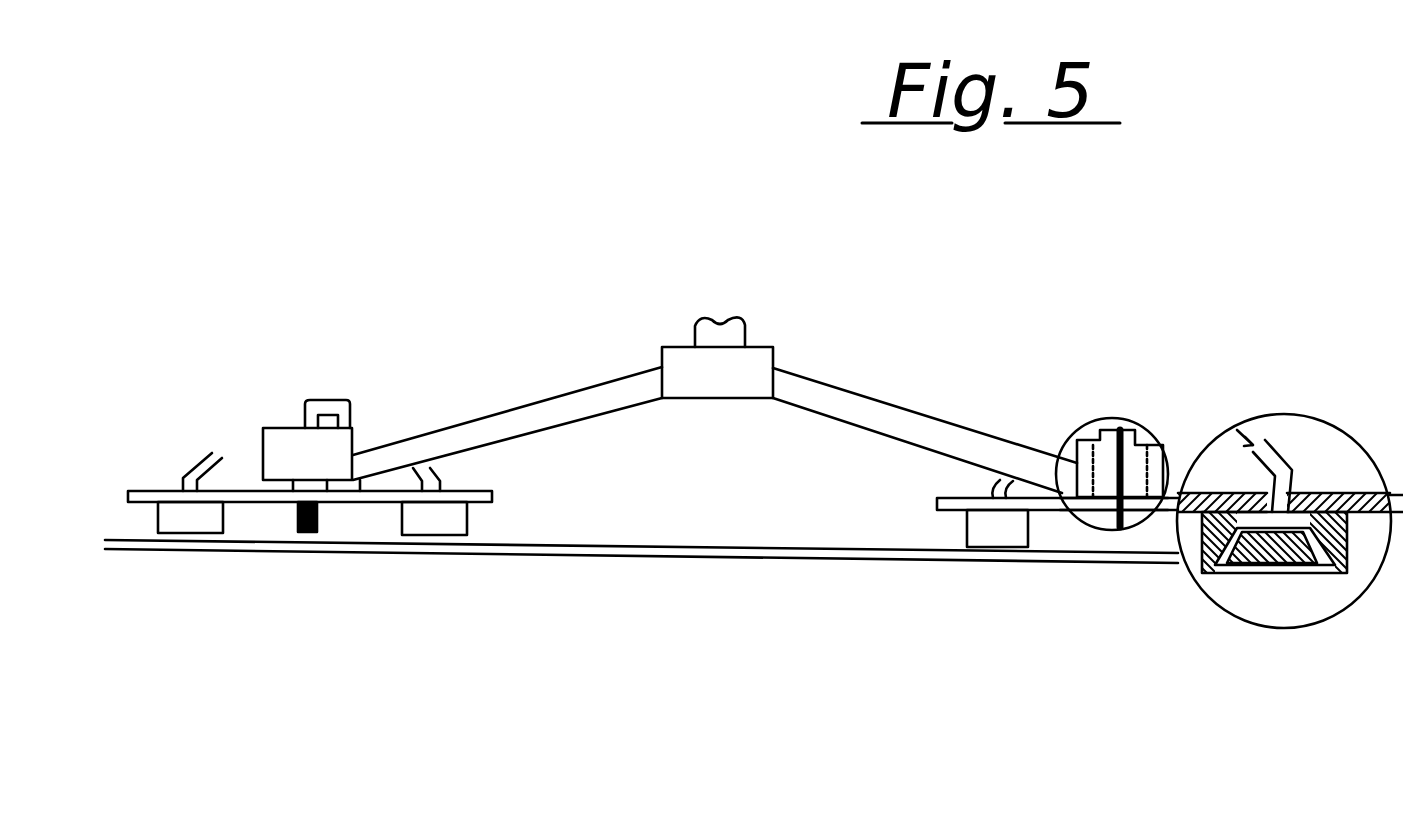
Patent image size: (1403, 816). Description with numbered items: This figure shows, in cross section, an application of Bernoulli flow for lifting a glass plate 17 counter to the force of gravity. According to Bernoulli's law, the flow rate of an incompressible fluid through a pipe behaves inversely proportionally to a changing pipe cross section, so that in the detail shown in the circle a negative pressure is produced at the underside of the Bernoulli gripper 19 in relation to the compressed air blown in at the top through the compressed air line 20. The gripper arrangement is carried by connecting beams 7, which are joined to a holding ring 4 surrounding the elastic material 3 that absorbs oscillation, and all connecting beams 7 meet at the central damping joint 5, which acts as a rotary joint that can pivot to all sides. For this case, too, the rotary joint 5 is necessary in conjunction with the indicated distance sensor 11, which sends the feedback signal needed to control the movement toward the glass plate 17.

The elastic material 3 is at (1152, 440).
The holding ring 4 is at (272, 438).
The central damping joint 5 is at (675, 355).
The connecting beam 7 is at (875, 410).
The distance sensor 11 is at (1127, 513).
The glass plate 17 is at (645, 550).
The Bernoulli gripper 19 is at (417, 525).
The compressed air line 20 is at (1280, 465).